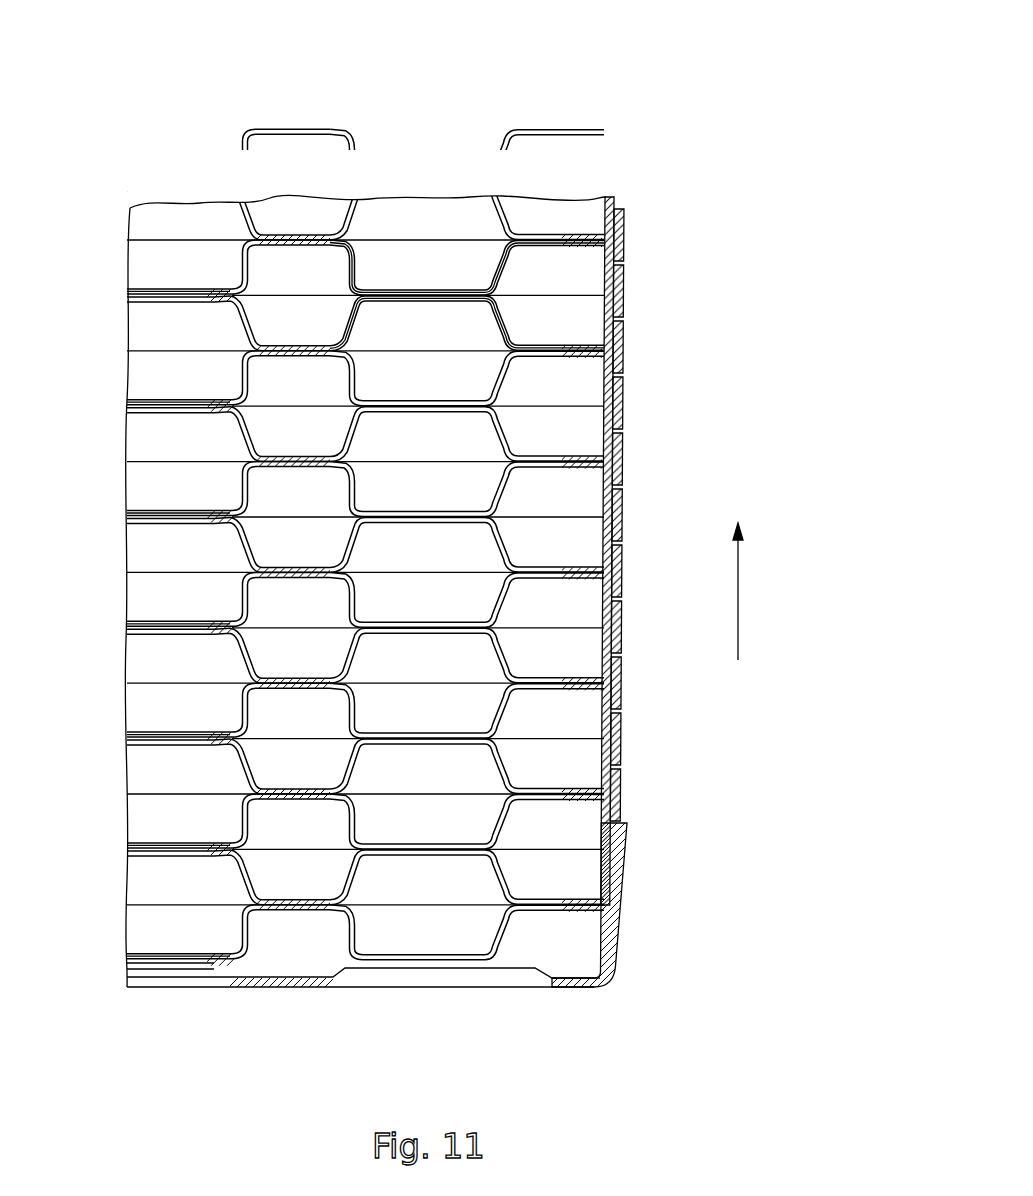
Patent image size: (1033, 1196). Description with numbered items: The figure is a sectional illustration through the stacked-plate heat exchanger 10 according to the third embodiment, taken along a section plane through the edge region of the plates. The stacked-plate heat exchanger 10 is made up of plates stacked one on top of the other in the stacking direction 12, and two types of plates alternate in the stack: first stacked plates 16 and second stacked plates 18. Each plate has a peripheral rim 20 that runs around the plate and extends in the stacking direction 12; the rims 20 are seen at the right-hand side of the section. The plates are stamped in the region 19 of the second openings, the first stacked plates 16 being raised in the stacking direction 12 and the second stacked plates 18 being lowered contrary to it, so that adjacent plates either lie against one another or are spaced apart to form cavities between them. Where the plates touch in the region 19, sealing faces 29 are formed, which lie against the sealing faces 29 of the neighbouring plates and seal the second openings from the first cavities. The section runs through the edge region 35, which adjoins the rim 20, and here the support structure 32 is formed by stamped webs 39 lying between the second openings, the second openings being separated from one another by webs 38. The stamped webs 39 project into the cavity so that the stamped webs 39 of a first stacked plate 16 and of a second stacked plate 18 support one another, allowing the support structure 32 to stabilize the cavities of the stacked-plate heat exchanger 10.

The stacked-plate heat exchanger 10 is at (440, 502).
The stacking direction 12 is at (742, 598).
The first stacked plate 16 is at (145, 269).
The second stacked plate 18 is at (145, 326).
The region of the at least one second opening 19 is at (424, 559).
The rim 20 is at (630, 397).
The sealing face 29 is at (290, 234).
The support structure 32 is at (566, 296).
The edge region 35 is at (424, 559).
The web 38 is at (566, 296).
The stamped web 39 is at (505, 268).